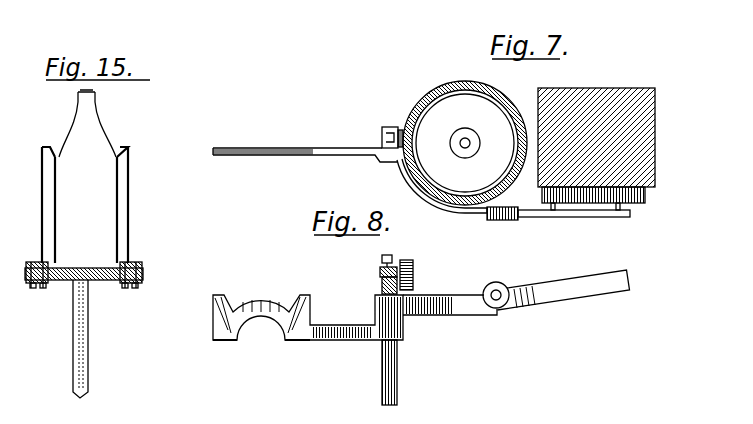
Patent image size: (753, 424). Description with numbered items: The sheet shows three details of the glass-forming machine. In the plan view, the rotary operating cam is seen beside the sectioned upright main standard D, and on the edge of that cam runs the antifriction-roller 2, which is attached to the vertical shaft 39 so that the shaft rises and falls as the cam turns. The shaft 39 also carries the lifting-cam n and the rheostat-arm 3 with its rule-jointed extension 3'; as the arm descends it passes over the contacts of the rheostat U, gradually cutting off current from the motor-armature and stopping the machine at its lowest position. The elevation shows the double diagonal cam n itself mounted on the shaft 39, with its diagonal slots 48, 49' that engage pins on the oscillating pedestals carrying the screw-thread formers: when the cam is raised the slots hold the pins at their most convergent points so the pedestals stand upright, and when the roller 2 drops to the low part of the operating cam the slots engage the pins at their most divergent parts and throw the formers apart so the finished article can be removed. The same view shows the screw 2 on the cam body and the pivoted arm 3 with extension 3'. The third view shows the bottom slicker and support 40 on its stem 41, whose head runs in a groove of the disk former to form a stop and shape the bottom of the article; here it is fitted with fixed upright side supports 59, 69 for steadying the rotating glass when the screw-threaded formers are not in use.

In FIG. 7, the lifting-cam n is at (305, 142).
In FIG. 8, the lifting-cam n is at (308, 307).
In FIG. 7, the antifriction-roller 2 is at (399, 128).
In FIG. 8, the antifriction-roller 2 is at (413, 268).
In FIG. 8, the rheostat-arm 3 is at (456, 296).
In FIG. 8, the rule-jointed extension 3' is at (564, 287).
In FIG. 8, the shaft 39 is at (402, 372).
In FIG. 8, the diagonal slot 48 is at (218, 341).
In FIG. 8, the diagonal slot 49' is at (292, 351).
In FIG. 7, the main standard D is at (612, 137).
In FIG. 7, the rheostat U is at (652, 195).
In FIG. 15, the tube wall 59 is at (41, 205).
In FIG. 15, the tube wall 69 is at (128, 197).
In FIG. 15, the bottom slicker and support 40 is at (141, 285).
In FIG. 15, the stem 41 is at (70, 307).